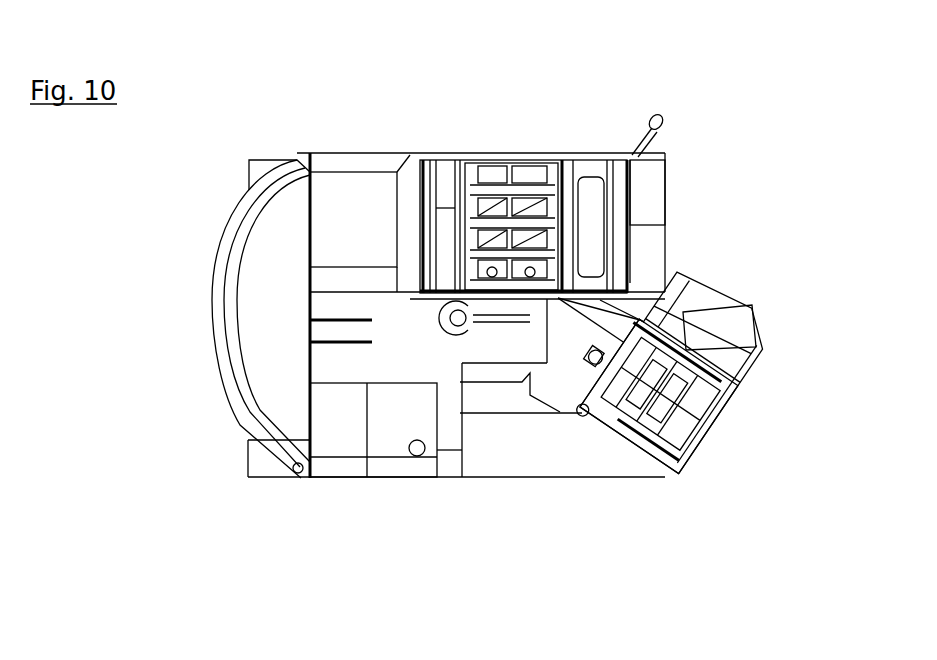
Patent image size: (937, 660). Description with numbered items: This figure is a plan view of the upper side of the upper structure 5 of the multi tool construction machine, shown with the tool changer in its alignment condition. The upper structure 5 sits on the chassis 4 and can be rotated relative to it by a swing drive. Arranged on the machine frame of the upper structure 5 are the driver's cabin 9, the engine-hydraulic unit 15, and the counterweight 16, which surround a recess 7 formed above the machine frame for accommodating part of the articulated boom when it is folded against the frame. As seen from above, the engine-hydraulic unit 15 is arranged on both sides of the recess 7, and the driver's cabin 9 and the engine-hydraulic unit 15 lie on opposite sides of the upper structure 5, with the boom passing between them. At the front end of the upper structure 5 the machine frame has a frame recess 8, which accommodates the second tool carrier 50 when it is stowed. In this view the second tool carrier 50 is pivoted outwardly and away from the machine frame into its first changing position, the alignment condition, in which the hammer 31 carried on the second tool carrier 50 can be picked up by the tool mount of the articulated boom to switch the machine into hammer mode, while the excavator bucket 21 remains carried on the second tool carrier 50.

The chassis 4 is at (637, 460).
The upper structure 5 is at (712, 207).
The recess 7 is at (420, 343).
The frame recess 8 is at (570, 387).
The driver's cabin 9 is at (586, 203).
The engine-hydraulic unit 15 is at (347, 210).
The counterweight 16 is at (215, 320).
The excavator bucket 21 is at (667, 410).
The hammer 31 is at (723, 330).
The second tool carrier 50 is at (728, 373).